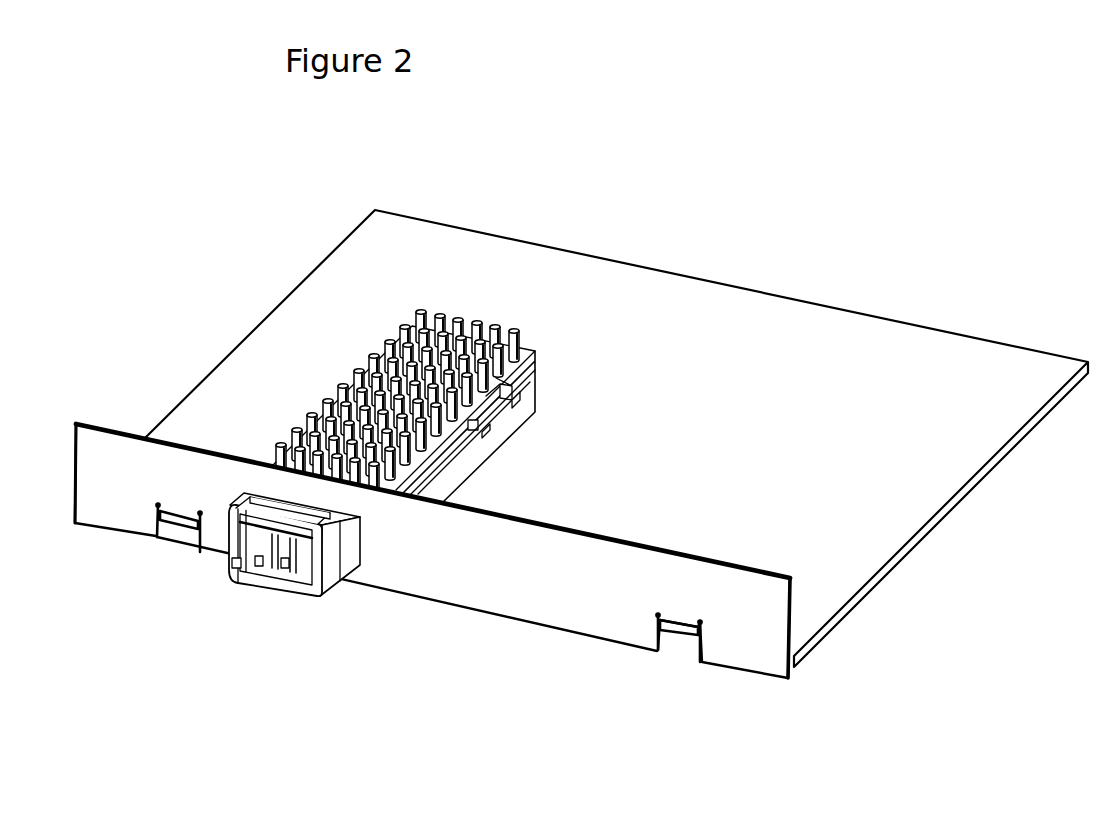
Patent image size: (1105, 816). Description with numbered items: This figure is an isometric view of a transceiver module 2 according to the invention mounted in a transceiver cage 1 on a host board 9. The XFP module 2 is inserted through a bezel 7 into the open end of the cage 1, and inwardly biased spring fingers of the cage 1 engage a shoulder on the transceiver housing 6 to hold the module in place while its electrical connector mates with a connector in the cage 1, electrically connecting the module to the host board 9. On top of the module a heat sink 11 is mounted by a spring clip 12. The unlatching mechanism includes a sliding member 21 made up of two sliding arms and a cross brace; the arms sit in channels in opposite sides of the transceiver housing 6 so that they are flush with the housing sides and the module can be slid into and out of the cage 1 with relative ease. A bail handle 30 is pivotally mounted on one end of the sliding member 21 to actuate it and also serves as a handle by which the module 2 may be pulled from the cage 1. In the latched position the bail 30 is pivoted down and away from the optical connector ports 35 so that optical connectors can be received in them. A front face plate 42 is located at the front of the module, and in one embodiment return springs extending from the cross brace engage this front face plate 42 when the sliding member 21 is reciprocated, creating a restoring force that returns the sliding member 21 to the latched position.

The cage 1 is at (508, 392).
The XFP module 2 is at (479, 359).
The transceiver housing 6 is at (278, 474).
The bezel 7 is at (745, 647).
The host board 9 is at (779, 454).
The heat sink 11 is at (490, 323).
The spring clip 12 is at (467, 438).
The sliding member 21 is at (340, 568).
The bail handle 30 is at (305, 530).
The optical connector ports 35 is at (283, 560).
The front face plate 42 is at (233, 563).